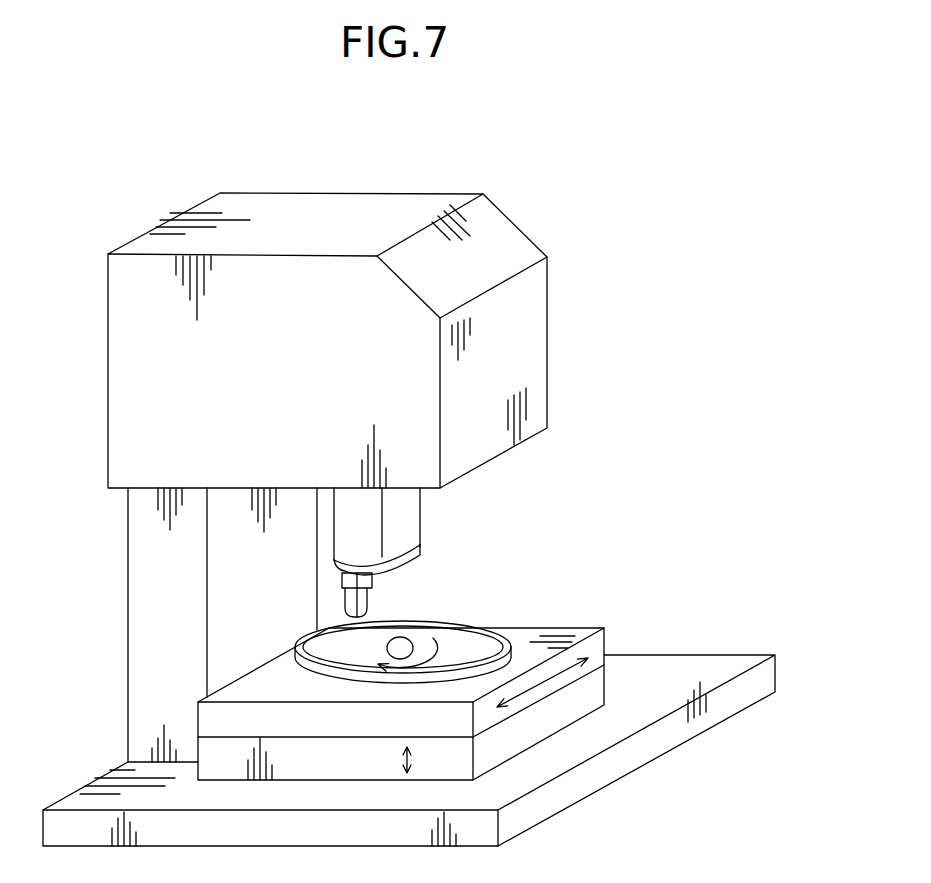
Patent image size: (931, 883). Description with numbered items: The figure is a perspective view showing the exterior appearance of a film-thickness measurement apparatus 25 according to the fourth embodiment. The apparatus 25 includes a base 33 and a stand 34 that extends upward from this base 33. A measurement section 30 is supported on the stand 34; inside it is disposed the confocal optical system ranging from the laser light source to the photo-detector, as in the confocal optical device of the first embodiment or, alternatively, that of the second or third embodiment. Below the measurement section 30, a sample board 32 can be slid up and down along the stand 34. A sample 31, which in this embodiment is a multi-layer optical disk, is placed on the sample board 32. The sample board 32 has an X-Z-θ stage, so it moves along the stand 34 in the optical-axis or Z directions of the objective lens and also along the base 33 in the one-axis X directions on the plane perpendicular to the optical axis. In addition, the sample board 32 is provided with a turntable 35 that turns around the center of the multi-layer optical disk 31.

The film-thickness measurement apparatus 25 is at (552, 130).
The measurement section 30 is at (623, 198).
The sample 31 is at (443, 637).
The sample board 32 is at (623, 688).
The base 33 is at (738, 653).
The stand 34 is at (127, 586).
The turntable 35 is at (308, 672).